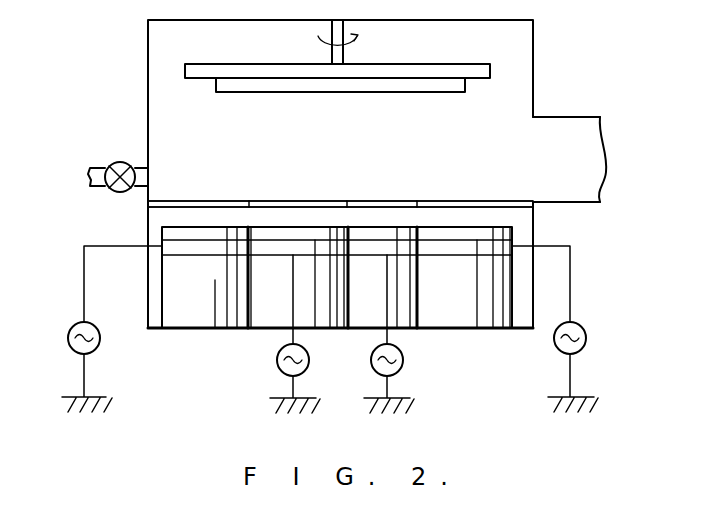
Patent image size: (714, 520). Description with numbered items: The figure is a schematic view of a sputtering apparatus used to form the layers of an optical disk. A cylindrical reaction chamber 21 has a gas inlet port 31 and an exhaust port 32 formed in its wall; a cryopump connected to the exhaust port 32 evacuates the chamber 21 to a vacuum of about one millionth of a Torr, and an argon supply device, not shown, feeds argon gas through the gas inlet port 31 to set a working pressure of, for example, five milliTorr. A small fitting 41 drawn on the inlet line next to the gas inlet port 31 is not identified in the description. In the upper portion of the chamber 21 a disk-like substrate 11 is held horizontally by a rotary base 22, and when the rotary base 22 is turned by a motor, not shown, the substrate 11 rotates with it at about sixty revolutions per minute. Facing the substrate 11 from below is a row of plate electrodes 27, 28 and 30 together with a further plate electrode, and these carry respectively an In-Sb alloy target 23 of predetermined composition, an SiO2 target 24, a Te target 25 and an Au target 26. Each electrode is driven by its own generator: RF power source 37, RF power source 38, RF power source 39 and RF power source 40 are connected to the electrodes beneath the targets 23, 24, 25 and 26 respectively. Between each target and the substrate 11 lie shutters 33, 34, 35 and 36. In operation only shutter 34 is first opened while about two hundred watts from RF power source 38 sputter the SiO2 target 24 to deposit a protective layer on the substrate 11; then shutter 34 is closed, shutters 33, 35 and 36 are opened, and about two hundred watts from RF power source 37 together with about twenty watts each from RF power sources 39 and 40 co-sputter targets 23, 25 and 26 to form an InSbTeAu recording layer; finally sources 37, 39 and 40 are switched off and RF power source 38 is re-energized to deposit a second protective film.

The disk-like substrate 11 is at (453, 92).
The reaction chamber 21 is at (533, 38).
The rotary base 22 is at (467, 64).
The In-Sb alloy target 23 is at (181, 226).
The SiO2 target 24 is at (271, 226).
The Te target 25 is at (366, 226).
The Au target 26 is at (433, 226).
The plate electrode 27 is at (188, 257).
The plate electrode 28 is at (270, 257).
The plate electrode 30 is at (452, 257).
The gas inlet port 31 is at (101, 169).
The exhaust port 32 is at (584, 117).
The shutter 33 is at (223, 201).
The shutter 34 is at (313, 201).
The shutter 35 is at (395, 201).
The shutter 36 is at (485, 201).
The RF power source 37 is at (75, 324).
The RF power source 38 is at (279, 370).
The RF power source 39 is at (403, 366).
The RF power source 40 is at (584, 331).
The gas inlet pipe 41 is at (122, 192).